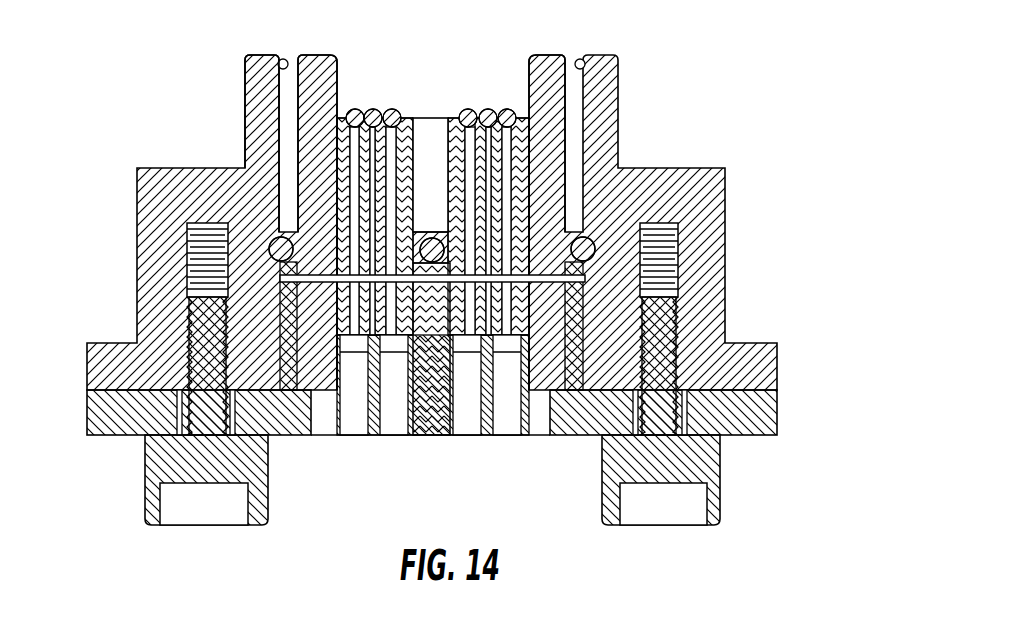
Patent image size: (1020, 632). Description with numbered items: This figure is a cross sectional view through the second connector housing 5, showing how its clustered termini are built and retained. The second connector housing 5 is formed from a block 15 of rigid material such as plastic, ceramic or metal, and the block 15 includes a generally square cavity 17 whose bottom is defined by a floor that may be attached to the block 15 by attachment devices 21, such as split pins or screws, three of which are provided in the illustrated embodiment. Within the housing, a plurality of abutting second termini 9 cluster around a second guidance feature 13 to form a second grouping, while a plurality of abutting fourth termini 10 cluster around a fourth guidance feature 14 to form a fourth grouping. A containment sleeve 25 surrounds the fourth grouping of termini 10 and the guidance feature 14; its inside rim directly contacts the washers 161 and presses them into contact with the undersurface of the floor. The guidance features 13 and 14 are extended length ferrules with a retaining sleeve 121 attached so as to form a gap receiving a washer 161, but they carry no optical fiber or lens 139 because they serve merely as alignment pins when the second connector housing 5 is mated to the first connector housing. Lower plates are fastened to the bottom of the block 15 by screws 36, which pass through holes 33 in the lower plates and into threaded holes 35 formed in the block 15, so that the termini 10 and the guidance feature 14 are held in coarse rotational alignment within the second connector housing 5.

The second connector housing 5 is at (777, 190).
The second termini 9 is at (357, 108).
The fourth termini 10 is at (445, 140).
The second guidance feature 13 is at (328, 72).
The fourth guidance feature 14 is at (540, 78).
The block 15 is at (148, 202).
The cavity 17 is at (288, 50).
The attachment devices 21 is at (275, 238).
The containment sleeve 25 is at (583, 325).
The holes 33 is at (180, 407).
The threaded holes 35 is at (195, 265).
The screws 36 is at (143, 467).
The retaining sleeve 121 is at (497, 395).
The lens 139 is at (390, 115).
The washers 161 is at (283, 276).